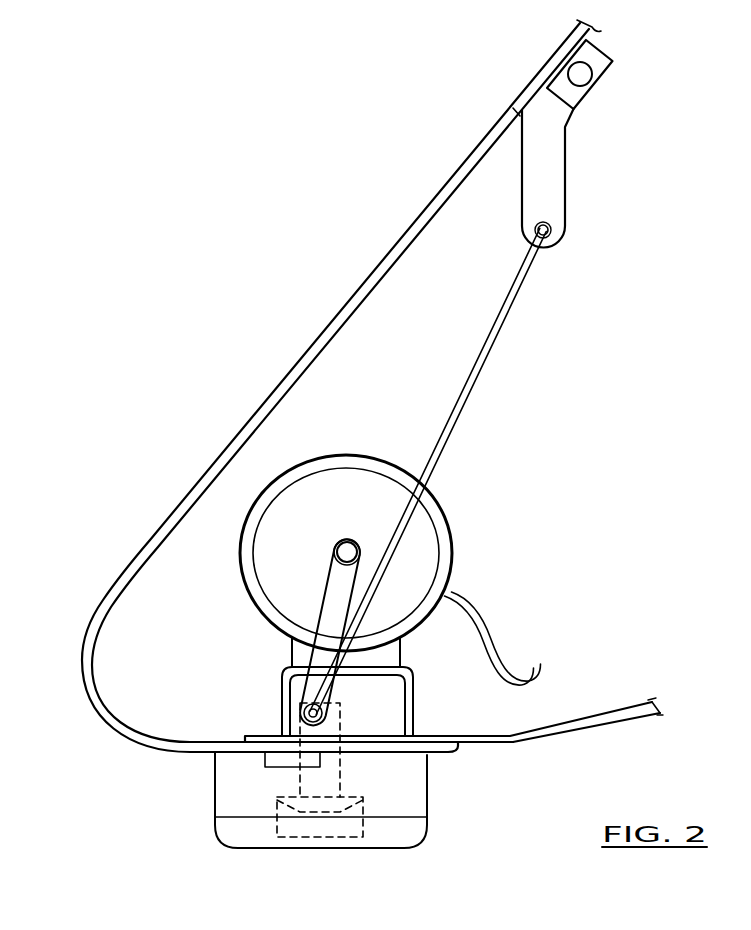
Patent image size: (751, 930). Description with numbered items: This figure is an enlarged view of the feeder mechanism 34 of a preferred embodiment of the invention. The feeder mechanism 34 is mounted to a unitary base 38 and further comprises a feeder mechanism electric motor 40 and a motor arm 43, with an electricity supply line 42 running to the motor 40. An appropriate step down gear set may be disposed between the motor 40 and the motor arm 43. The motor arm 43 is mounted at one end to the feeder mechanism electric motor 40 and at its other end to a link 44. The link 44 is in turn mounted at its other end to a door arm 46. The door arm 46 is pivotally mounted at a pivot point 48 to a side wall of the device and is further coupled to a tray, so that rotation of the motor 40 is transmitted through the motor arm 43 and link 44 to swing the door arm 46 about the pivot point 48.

The feeder mechanism 34 is at (341, 386).
The unitary base 38 is at (532, 724).
The feeder mechanism electric motor 40 is at (433, 540).
The electricity supply line 42 is at (497, 627).
The motor arm 43 is at (322, 655).
The link 44 is at (455, 423).
The door arm 46 is at (547, 190).
The pivot point 48 is at (590, 63).